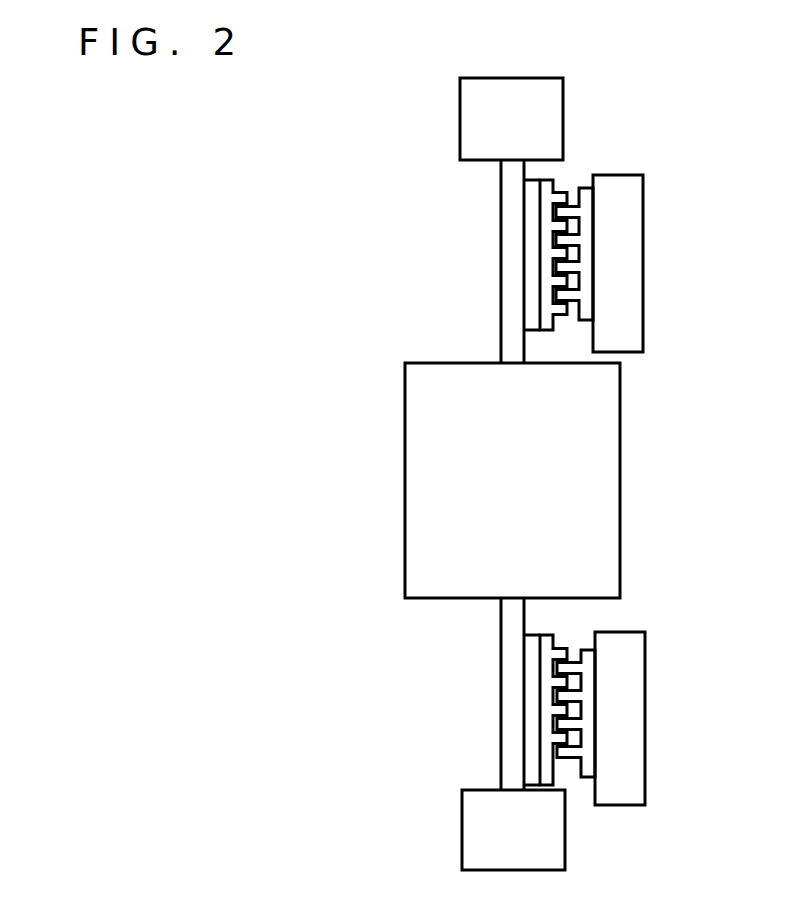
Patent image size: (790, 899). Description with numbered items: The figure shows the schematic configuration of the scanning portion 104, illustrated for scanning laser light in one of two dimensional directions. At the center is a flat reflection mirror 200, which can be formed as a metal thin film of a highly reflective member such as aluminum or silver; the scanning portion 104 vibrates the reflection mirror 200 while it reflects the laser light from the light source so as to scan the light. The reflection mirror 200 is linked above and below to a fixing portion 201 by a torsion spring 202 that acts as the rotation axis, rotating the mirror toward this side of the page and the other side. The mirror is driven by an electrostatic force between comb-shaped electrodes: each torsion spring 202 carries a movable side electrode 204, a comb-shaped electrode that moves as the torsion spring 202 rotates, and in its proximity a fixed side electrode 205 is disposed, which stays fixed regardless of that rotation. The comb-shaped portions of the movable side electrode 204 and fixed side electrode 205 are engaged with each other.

The scanning portion 104 is at (358, 172).
The reflection mirror 200 is at (597, 423).
The fixing portion 201 is at (468, 122).
The torsion spring 202 is at (503, 237).
The movable side electrode 204 is at (542, 184).
The fixed side electrode 205 is at (582, 192).